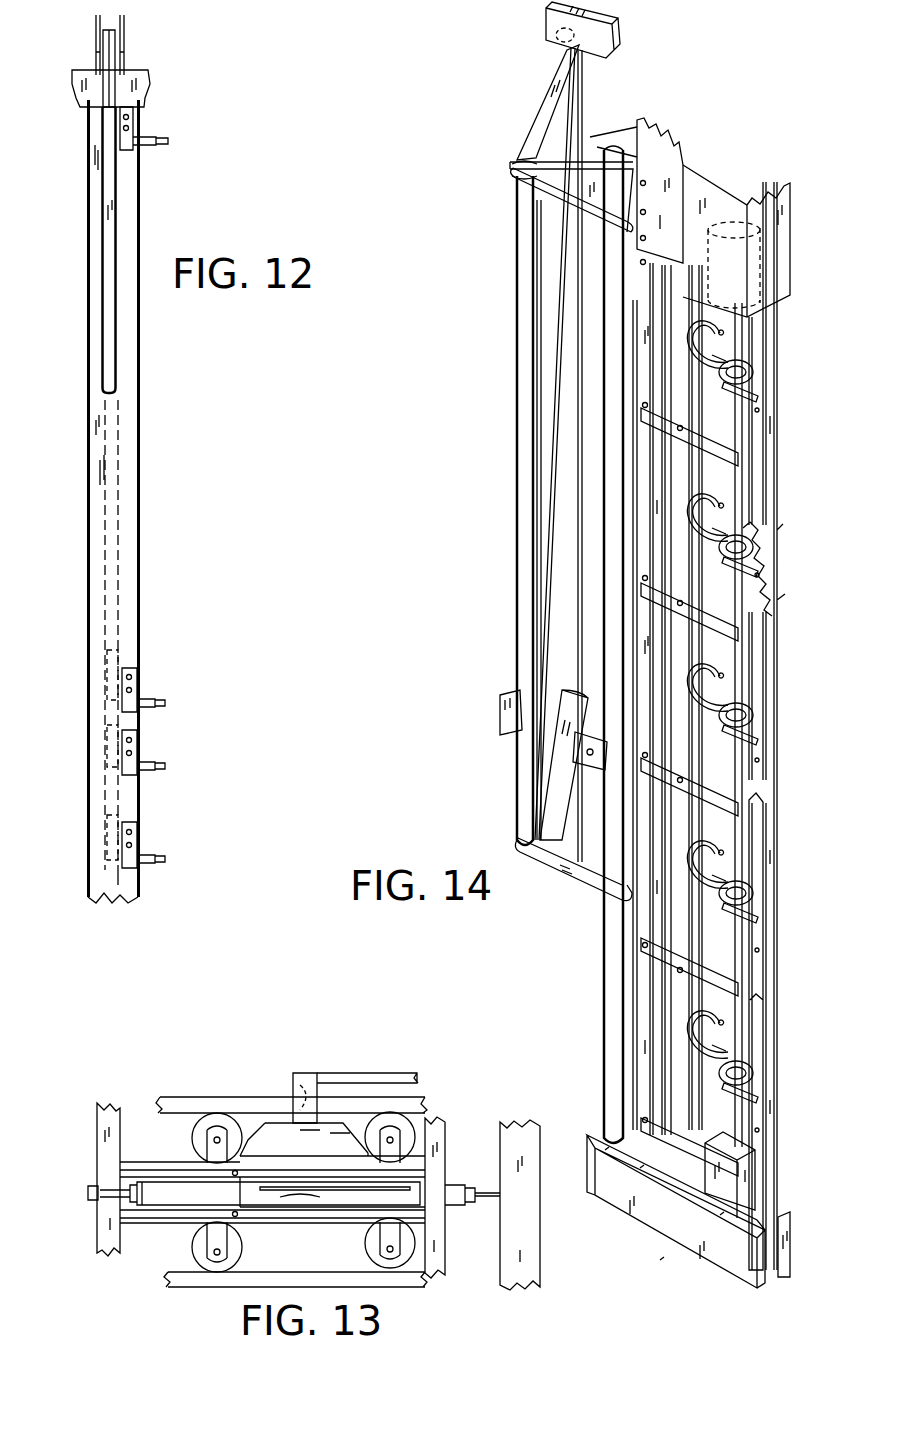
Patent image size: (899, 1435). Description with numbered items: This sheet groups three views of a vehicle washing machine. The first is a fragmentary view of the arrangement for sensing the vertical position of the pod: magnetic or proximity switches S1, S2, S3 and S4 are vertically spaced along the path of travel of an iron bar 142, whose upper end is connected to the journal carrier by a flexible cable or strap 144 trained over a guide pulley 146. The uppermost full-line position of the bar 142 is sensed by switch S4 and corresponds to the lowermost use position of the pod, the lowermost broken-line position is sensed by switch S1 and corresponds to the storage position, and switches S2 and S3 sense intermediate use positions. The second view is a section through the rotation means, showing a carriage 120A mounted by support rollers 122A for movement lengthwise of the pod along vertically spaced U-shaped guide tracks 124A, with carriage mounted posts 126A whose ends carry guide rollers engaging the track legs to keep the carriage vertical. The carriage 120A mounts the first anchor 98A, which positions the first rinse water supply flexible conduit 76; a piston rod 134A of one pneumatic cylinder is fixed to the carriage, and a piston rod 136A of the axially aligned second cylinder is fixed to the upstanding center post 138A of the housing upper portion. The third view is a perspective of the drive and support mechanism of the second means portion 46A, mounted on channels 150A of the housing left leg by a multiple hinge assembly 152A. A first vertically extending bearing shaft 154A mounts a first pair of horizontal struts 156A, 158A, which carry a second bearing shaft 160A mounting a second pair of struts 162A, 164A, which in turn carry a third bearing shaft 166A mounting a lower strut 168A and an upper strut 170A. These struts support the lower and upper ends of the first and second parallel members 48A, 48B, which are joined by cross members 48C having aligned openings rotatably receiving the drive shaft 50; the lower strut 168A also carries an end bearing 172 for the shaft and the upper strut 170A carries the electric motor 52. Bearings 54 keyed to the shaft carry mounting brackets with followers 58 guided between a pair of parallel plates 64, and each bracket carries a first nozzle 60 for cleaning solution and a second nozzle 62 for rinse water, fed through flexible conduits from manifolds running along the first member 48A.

In FIG. 14, the second means portion 46A is at (803, 68).
In FIG. 14, the first parallel member 48A is at (777, 592).
In FIG. 14, the second parallel member 48B is at (645, 1000).
In FIG. 14, the cross members 48C is at (786, 806).
In FIG. 14, the drive shaft 50 is at (742, 420).
In FIG. 14, the electric motor 52 is at (780, 255).
In FIG. 14, the bearings 54 is at (757, 901).
In FIG. 14, the followers 58 is at (738, 522).
In FIG. 14, the first nozzle 60 is at (750, 740).
In FIG. 14, the second nozzle 62 is at (755, 776).
In FIG. 14, the parallel plates 64 is at (688, 472).
In FIG. 13, the first rinse water supply flexible conduit 76 is at (360, 1080).
In FIG. 13, the first anchor 98A is at (308, 1073).
In FIG. 13, the carriage 120A is at (176, 1164).
In FIG. 13, the support rollers 122A is at (408, 1128).
In FIG. 13, the guide tracks 124A is at (260, 1104).
In FIG. 13, the carriage mounted posts 126A is at (105, 1160).
In FIG. 13, the piston rod 134A is at (179, 1164).
In FIG. 13, the piston rod 136A is at (490, 1190).
In FIG. 13, the upstanding center post 138A is at (530, 1215).
In FIG. 12, the iron bar 142 is at (110, 349).
In FIG. 12, the flexible cable or strap 144 is at (110, 57).
In FIG. 12, the guide pulley 146 is at (122, 40).
In FIG. 14, the channels 150A is at (612, 22).
In FIG. 14, the multiple hinge assembly 152A is at (514, 512).
In FIG. 14, the first vertically extending bearing shaft 154A is at (590, 348).
In FIG. 14, the horizontal strut 156A is at (560, 790).
In FIG. 14, the horizontal strut 158A is at (558, 60).
In FIG. 14, the second vertically extending bearing shaft 160A is at (527, 600).
In FIG. 14, the horizontal strut 162A is at (590, 876).
In FIG. 14, the horizontal strut 164A is at (567, 208).
In FIG. 14, the third vertically extending bearing shaft 166A is at (608, 565).
In FIG. 14, the lower strut 168A is at (735, 1258).
In FIG. 14, the upper strut 170A is at (655, 152).
In FIG. 14, the end bearing 172 is at (745, 1195).
In FIG. 12, the switch S1 is at (133, 842).
In FIG. 12, the switch S2 is at (133, 747).
In FIG. 12, the switch S3 is at (133, 683).
In FIG. 12, the switch S4 is at (130, 128).